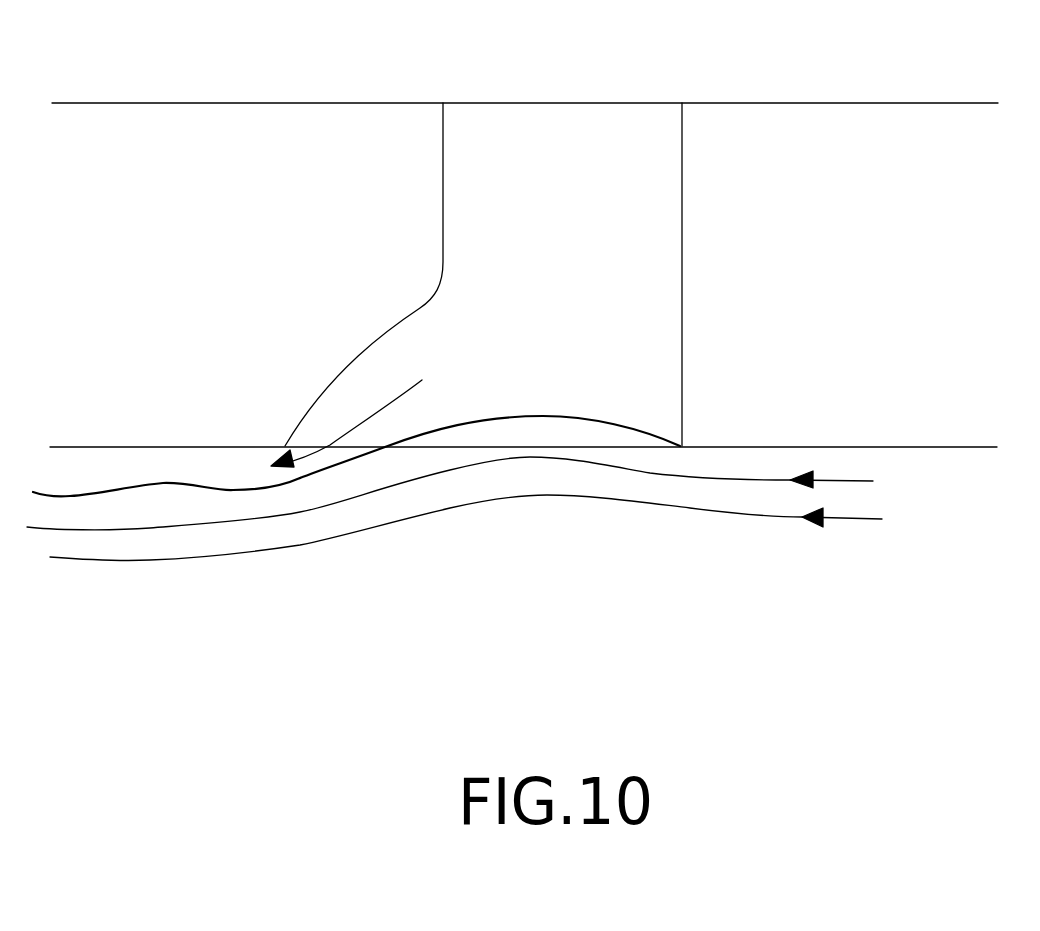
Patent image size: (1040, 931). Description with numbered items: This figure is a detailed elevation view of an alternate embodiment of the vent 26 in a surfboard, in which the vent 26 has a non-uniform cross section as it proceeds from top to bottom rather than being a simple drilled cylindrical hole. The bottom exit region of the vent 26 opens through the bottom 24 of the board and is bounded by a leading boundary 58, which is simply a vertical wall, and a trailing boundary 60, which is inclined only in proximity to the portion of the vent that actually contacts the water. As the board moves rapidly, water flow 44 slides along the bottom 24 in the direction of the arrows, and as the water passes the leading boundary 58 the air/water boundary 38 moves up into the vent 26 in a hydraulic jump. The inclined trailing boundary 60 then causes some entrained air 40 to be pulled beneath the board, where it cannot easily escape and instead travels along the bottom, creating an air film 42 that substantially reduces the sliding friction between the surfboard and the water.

The bottom 24 is at (910, 447).
The vent 26 is at (613, 160).
The air/water boundary 38 is at (355, 458).
The entrained air 40 is at (375, 417).
The air film 42 is at (83, 468).
The water flow 44 is at (738, 500).
The leading boundary 58 is at (640, 458).
The trailing boundary 60 is at (310, 417).